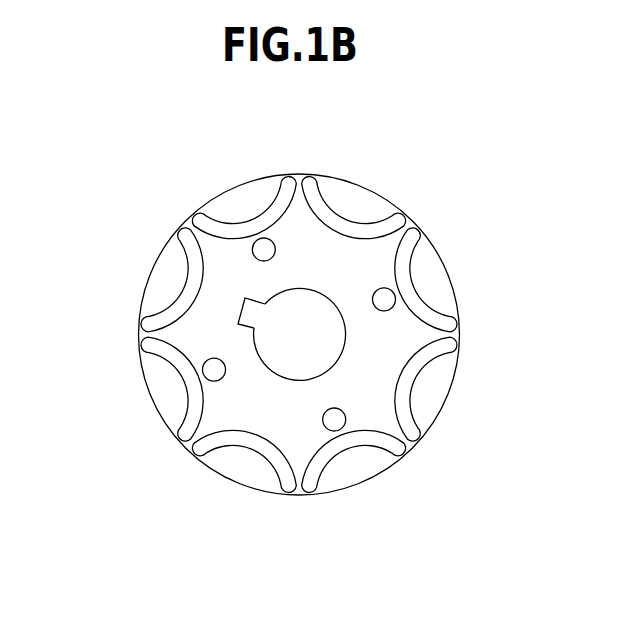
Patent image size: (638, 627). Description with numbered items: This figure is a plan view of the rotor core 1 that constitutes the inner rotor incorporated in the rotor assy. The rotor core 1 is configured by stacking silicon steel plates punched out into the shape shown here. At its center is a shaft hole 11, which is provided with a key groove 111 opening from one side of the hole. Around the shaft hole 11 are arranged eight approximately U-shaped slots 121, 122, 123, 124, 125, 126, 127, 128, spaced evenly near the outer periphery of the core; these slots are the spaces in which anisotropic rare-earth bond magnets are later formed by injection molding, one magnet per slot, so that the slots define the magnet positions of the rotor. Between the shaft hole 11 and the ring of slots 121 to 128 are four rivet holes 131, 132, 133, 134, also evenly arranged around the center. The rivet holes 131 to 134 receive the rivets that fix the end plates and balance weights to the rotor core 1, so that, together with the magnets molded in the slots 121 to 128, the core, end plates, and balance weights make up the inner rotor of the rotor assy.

The rotor core 1 is at (593, 614).
The shaft hole 11 is at (344, 347).
The key groove 111 is at (240, 313).
The slot 121 is at (420, 282).
The slot 122 is at (422, 378).
The slot 123 is at (350, 450).
The slot 124 is at (246, 450).
The slot 125 is at (178, 378).
The slot 126 is at (182, 282).
The slot 127 is at (255, 212).
The slot 128 is at (345, 212).
The rivet hole 131 is at (385, 287).
The rivet hole 132 is at (337, 425).
The rivet hole 133 is at (205, 378).
The rivet hole 134 is at (253, 243).